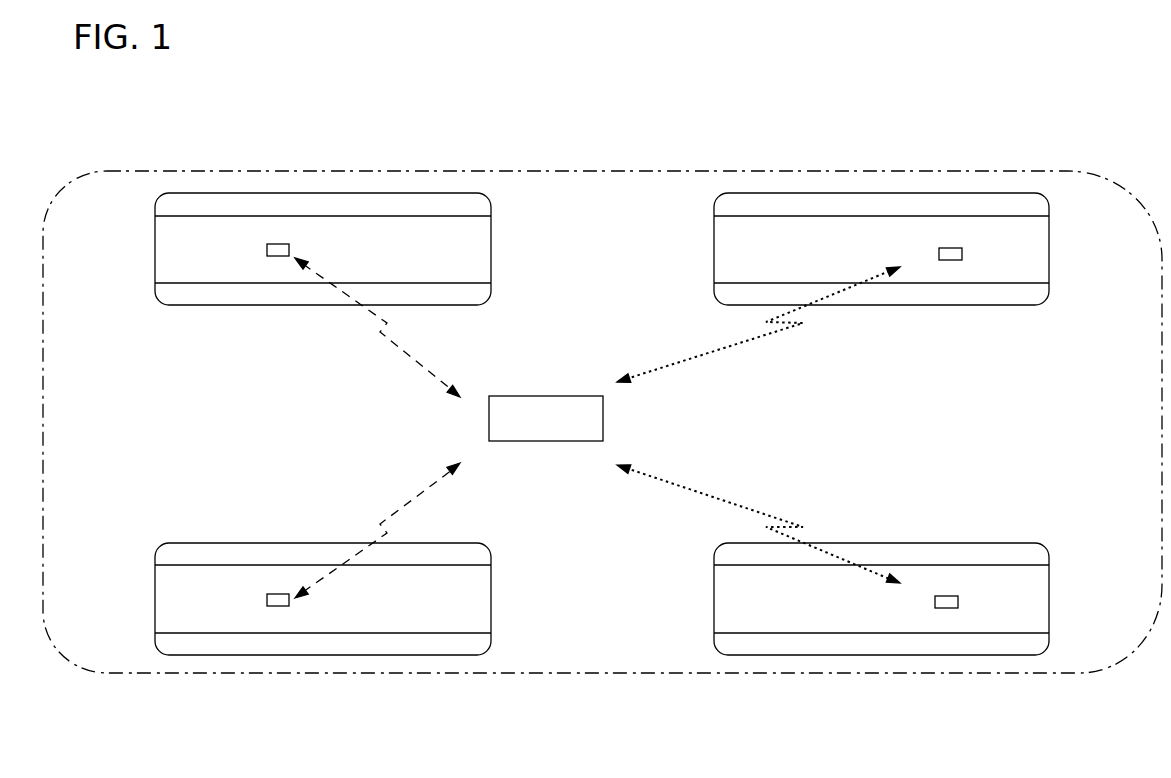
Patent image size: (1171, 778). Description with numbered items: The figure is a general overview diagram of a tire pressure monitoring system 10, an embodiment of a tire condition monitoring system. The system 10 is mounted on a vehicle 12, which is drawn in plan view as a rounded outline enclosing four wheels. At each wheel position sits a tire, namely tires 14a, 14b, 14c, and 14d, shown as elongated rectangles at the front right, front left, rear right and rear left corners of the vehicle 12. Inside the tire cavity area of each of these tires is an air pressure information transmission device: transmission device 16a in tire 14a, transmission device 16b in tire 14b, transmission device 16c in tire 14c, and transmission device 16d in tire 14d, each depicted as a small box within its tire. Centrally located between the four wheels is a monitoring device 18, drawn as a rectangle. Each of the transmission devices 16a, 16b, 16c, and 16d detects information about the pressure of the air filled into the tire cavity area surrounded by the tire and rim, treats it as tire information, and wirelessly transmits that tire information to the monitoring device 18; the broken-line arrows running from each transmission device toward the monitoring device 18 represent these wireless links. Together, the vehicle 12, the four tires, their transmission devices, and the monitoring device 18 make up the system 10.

The tire pressure monitoring system 10 is at (514, 91).
The vehicle 12 is at (544, 171).
The tire 14a is at (318, 193).
The tire 14b is at (318, 655).
The tire 14c is at (895, 193).
The tire 14d is at (872, 655).
The air pressure information transmission device 16a is at (277, 244).
The air pressure information transmission device 16b is at (277, 606).
The air pressure information transmission device 16c is at (950, 248).
The air pressure information transmission device 16d is at (949, 608).
The monitoring device 18 is at (545, 441).